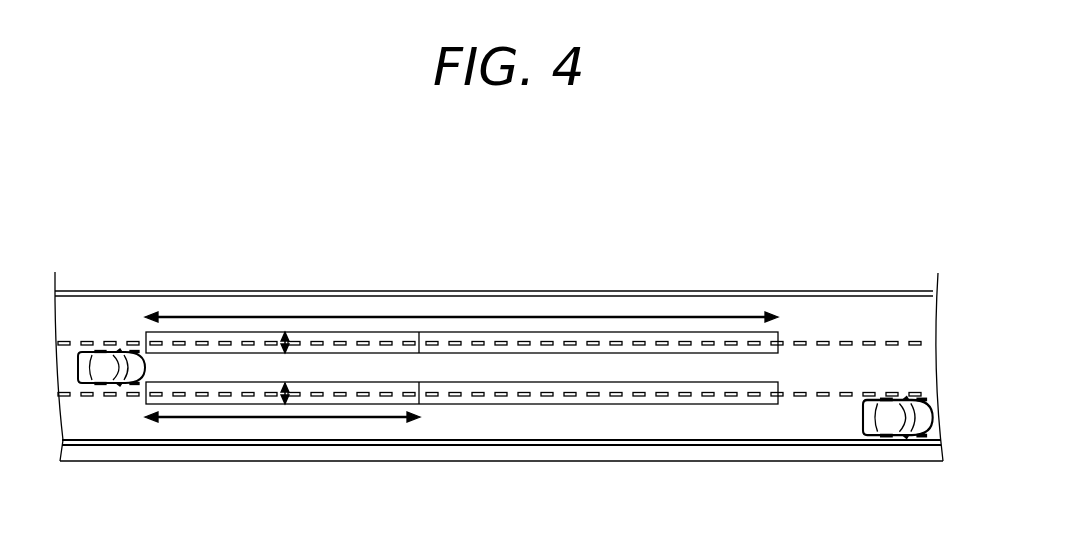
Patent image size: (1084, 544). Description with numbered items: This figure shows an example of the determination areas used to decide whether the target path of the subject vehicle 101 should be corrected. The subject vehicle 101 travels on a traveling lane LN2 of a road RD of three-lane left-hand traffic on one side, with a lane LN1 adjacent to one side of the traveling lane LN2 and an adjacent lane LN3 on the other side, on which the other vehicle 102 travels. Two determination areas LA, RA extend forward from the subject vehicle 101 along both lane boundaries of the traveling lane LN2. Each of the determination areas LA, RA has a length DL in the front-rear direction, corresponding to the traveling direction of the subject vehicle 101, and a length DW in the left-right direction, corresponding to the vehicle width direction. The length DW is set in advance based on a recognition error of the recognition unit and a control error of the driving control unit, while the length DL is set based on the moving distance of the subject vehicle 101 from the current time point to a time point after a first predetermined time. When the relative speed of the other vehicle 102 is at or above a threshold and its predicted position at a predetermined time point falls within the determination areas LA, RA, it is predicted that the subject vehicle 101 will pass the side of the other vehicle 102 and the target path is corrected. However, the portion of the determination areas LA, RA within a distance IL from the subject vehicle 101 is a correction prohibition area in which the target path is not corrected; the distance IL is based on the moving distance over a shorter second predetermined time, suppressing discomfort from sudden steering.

The subject vehicle 101 is at (103, 352).
The other vehicle 102 is at (890, 438).
The road RD is at (890, 285).
The lane LN1 is at (826, 308).
The traveling lane LN2 is at (888, 358).
The adjacent lane LN3 is at (762, 420).
The determination area LA is at (779, 340).
The determination area RA is at (779, 388).
The length in the left-right direction DW is at (283, 390).
The length in the front-rear direction DL is at (320, 317).
The distance IL is at (235, 420).